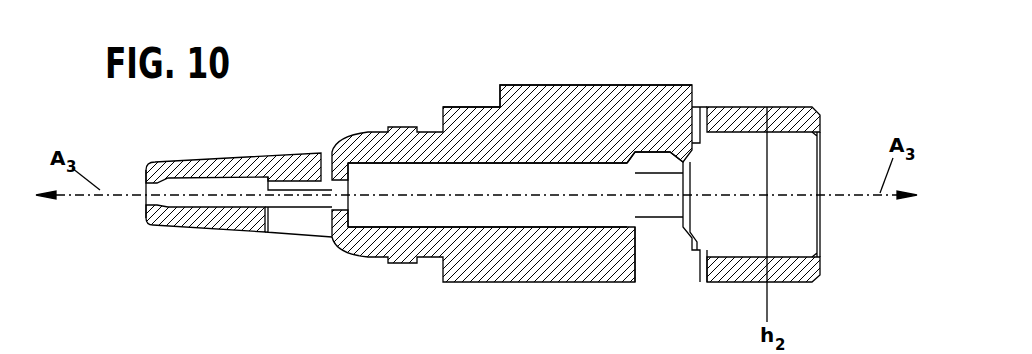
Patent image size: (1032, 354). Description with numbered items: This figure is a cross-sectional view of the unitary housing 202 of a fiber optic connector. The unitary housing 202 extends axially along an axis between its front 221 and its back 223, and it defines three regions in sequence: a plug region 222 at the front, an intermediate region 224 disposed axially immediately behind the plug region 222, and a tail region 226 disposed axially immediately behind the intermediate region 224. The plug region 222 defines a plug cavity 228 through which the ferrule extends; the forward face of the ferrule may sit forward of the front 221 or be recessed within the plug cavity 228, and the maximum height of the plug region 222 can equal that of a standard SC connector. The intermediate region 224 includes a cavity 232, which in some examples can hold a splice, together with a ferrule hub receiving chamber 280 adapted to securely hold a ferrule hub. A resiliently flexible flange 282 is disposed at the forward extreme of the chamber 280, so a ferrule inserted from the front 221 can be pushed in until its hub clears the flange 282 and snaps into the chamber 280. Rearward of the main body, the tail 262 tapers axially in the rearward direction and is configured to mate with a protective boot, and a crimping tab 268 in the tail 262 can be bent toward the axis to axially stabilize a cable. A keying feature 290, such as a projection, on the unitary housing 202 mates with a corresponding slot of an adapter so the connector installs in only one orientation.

The unitary housing 202 is at (826, 85).
The front 221 is at (822, 118).
The plug region 222 is at (722, 110).
The back 223 is at (143, 170).
The intermediate region 224 is at (537, 105).
The tail region 226 is at (253, 160).
The plug cavity 228 is at (790, 220).
The cavity 232 is at (393, 170).
The tail 262 is at (218, 160).
The crimping tab 268 is at (303, 173).
The ferrule hub receiving chamber 280 is at (655, 158).
The flange 282 is at (684, 158).
The keying feature 290 is at (598, 92).